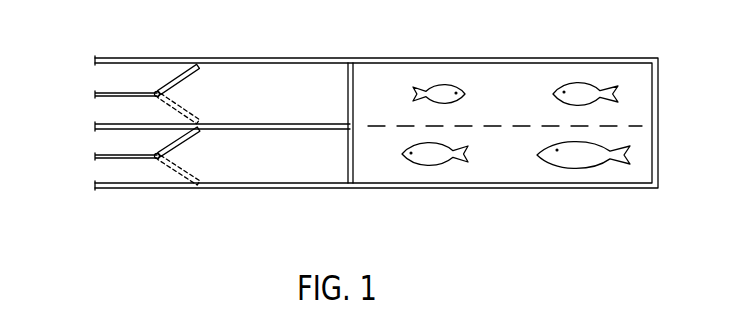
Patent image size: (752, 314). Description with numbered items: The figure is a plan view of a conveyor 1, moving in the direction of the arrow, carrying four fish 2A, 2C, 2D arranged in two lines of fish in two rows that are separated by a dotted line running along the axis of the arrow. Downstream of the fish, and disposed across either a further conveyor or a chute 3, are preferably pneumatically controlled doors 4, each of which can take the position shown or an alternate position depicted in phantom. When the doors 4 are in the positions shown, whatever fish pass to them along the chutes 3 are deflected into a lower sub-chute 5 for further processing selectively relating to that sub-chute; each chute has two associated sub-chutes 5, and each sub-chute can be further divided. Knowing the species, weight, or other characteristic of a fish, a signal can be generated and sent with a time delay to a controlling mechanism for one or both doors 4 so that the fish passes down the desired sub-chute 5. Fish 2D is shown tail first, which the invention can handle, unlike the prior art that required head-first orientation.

The conveyor 1 is at (516, 188).
The fish 2A is at (423, 166).
The fish 2C is at (582, 83).
The fish 2D is at (438, 84).
The chute 3 is at (292, 77).
The door 4 is at (174, 74).
The sub-chute 5 is at (102, 110).